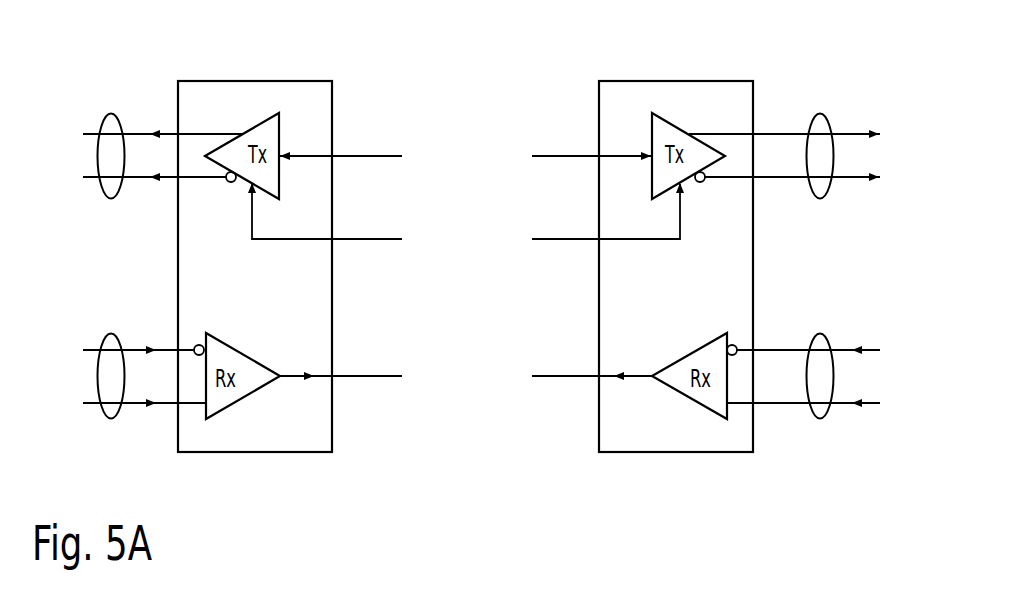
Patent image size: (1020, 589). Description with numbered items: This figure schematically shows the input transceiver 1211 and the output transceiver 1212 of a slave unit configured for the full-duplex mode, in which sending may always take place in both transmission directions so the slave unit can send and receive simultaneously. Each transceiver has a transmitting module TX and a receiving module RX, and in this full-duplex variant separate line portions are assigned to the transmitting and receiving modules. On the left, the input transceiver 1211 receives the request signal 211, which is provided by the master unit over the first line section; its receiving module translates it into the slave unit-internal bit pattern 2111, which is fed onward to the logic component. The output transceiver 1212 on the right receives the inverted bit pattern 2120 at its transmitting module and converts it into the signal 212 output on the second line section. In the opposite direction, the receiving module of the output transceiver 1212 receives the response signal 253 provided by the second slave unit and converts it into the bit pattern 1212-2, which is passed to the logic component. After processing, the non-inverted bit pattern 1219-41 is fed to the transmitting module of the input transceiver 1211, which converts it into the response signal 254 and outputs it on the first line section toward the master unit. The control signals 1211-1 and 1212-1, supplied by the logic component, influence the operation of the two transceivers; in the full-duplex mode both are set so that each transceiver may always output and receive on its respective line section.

The input transceiver 1211 is at (253, 80).
The response signal 254 is at (111, 113).
The bit pattern 1219-41 is at (380, 155).
The signal 1211-1 is at (373, 240).
The slave unit-internal bit pattern 2111 is at (373, 378).
The request signal 211 is at (113, 420).
The output transceiver 1212 is at (672, 80).
The signal 212 is at (819, 113).
The bit pattern 2120 is at (545, 155).
The signal 1212-1 is at (545, 238).
The bit pattern 1212-2 is at (548, 378).
The response signal 253 is at (822, 420).